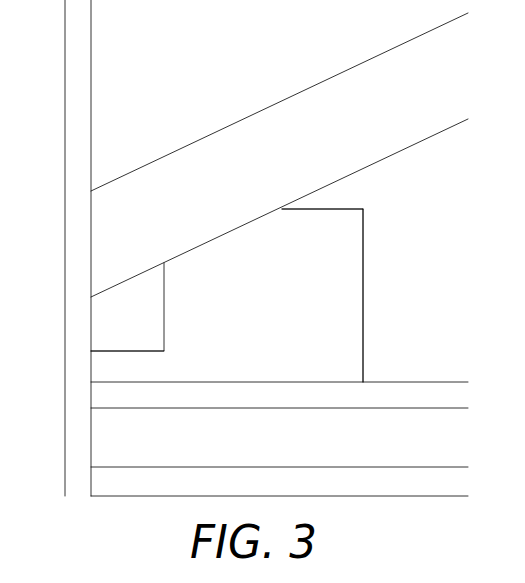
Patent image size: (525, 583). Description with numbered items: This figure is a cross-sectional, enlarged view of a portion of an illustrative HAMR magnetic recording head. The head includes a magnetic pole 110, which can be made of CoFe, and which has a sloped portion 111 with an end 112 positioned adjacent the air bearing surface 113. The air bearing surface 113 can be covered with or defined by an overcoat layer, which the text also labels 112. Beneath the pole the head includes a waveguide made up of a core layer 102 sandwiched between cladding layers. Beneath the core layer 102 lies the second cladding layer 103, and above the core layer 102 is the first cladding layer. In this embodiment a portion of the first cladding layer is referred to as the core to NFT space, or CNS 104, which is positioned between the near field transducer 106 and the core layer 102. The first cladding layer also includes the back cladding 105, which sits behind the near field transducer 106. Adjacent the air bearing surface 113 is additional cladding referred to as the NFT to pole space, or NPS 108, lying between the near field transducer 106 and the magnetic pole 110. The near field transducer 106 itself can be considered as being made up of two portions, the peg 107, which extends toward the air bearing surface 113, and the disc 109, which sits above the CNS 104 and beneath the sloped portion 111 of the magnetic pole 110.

The core layer 102 is at (175, 453).
The second cladding layer 103 is at (222, 494).
The core to NFT space (CNS) 104 is at (257, 407).
The back cladding 105 is at (417, 313).
The near field transducer (NFT) 106 is at (336, 209).
The peg 107 is at (150, 380).
The NFT to pole space (NPS) 108 is at (143, 331).
The disc 109 is at (282, 273).
The magnetic pole 110 is at (245, 178).
The sloped portion 111 is at (145, 208).
The end 112 is at (75, 128).
The air bearing surface (ABS) 113 is at (60, 288).